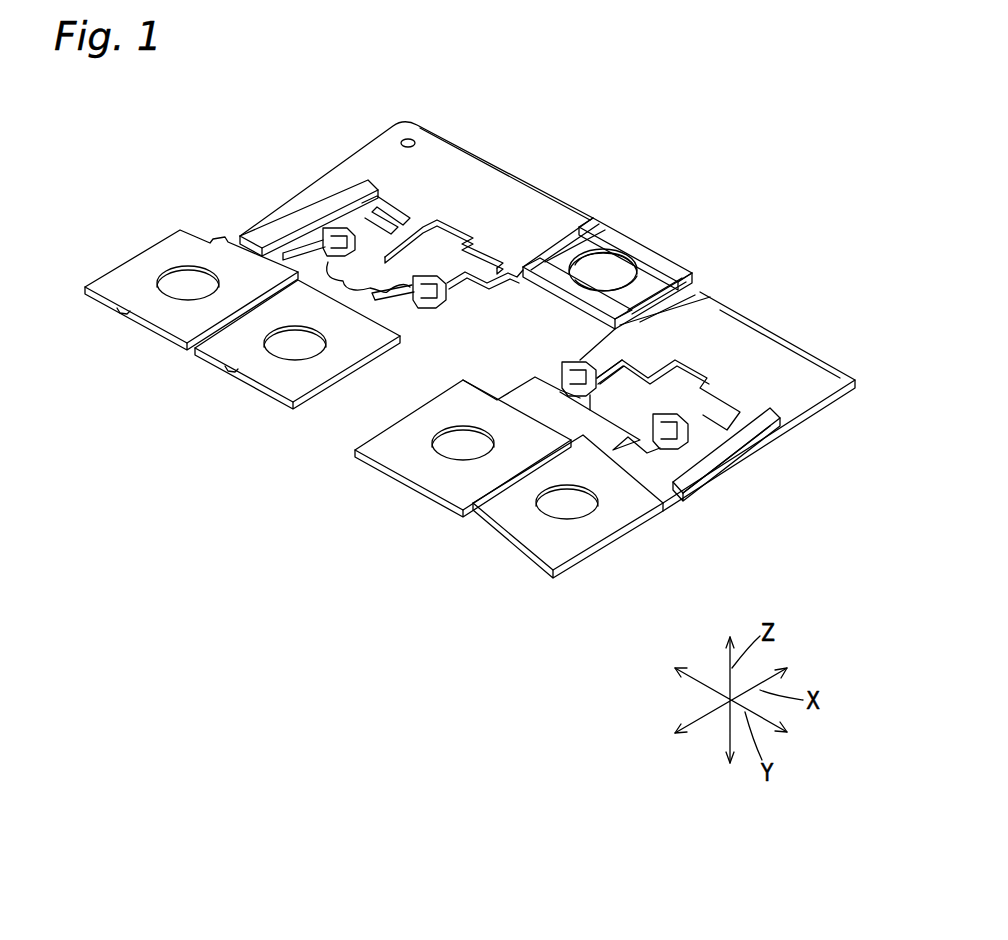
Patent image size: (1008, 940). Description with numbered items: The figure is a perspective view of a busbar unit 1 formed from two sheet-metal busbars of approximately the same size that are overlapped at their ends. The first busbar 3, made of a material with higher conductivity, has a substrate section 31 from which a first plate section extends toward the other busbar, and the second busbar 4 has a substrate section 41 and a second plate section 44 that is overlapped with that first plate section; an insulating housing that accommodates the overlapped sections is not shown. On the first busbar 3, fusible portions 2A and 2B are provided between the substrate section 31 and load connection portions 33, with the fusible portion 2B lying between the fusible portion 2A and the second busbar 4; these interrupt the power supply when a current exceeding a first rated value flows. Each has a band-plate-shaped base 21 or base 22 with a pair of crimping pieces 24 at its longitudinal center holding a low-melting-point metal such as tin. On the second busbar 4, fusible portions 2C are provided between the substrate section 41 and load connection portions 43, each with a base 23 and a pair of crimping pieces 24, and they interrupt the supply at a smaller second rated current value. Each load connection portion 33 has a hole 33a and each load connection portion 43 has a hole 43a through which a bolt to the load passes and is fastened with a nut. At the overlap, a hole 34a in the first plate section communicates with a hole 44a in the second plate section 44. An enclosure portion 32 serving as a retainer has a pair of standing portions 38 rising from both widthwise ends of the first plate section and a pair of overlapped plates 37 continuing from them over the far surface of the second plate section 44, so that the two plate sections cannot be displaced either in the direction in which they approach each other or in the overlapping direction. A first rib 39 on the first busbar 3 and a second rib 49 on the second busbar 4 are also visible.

The busbar unit 1 is at (702, 151).
The fusible portion 2A is at (678, 412).
The fusible portion 2B is at (562, 364).
The fusible portion 2C is at (346, 226).
The first busbar 3 is at (795, 326).
The second busbar 4 is at (447, 140).
The base 21 is at (670, 447).
The base 22 is at (588, 393).
The base 23 is at (368, 274).
The crimping pieces 24 is at (343, 237).
The substrate section 31 is at (823, 383).
The enclosure portion 32 is at (687, 260).
The load connection portions 33 is at (437, 477).
The hole 33a is at (463, 455).
The hole 34a is at (625, 260).
The overlapped plates 37 is at (662, 256).
The standing portions 38 is at (700, 282).
The first rib 39 is at (668, 297).
The substrate section 41 is at (472, 180).
The load connection portions 43 is at (163, 317).
The hole 43a is at (192, 296).
The second plate section 44 is at (578, 243).
The hole 44a is at (602, 258).
The second rib 49 is at (561, 240).